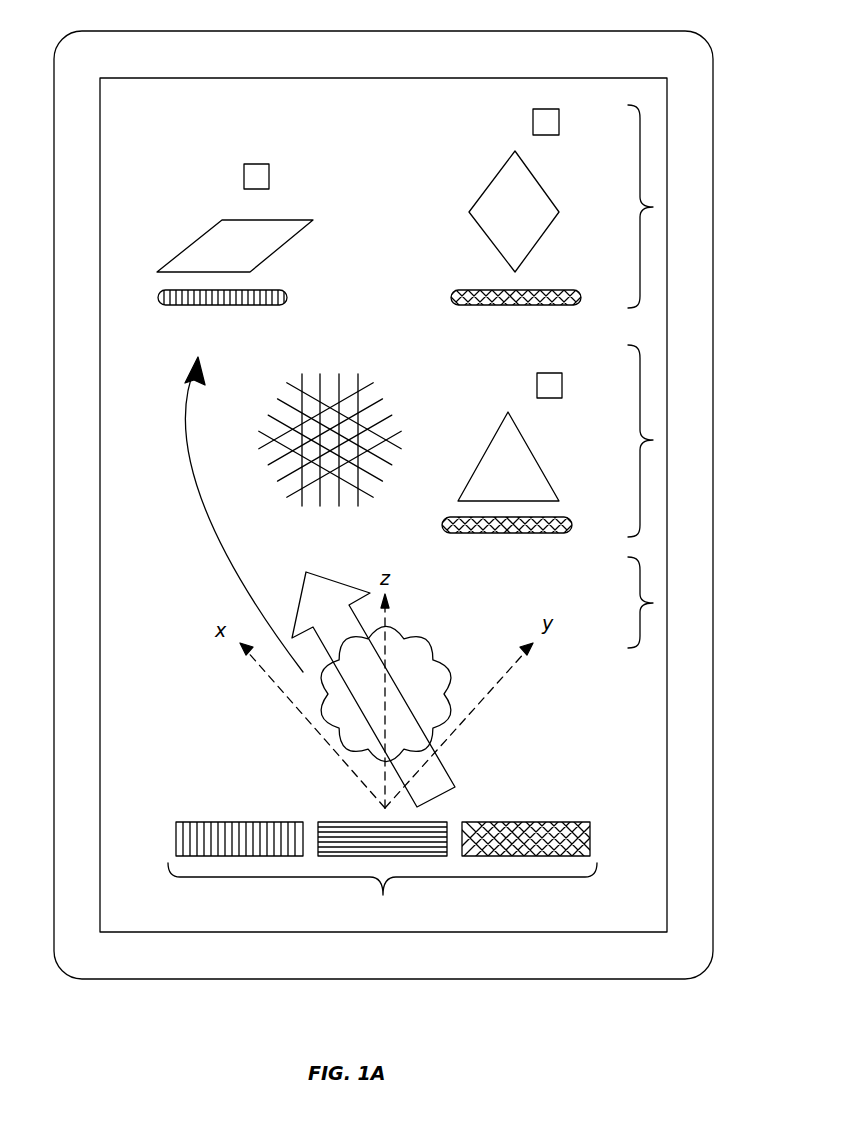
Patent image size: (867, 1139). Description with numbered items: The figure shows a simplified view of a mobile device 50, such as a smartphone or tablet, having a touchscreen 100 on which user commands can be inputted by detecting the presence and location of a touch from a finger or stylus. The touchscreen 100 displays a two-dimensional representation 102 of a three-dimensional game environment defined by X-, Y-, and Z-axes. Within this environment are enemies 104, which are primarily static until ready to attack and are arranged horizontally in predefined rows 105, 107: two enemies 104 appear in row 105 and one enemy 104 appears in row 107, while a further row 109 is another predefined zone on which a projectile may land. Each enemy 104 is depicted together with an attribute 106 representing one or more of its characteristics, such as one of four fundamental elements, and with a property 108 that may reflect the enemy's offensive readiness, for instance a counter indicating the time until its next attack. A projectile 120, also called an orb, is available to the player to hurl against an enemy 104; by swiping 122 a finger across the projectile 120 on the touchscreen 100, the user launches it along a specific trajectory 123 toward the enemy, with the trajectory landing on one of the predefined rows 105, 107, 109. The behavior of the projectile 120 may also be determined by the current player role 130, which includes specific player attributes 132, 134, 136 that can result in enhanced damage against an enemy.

The mobile device 50 is at (377, 31).
The touchscreen 100 is at (560, 78).
The two-dimensional representation 102 is at (378, 367).
The enemy 104 is at (302, 220).
The row 105 is at (655, 207).
The attribute 106 is at (270, 290).
The row 107 is at (655, 440).
The property 108 is at (266, 164).
The row 109 is at (655, 603).
The projectile 120 is at (430, 634).
The swiping 122 is at (318, 575).
The trajectory 123 is at (212, 517).
The player role 130 is at (378, 855).
The player attribute 132 is at (213, 822).
The player attribute 134 is at (355, 822).
The player attribute 136 is at (533, 822).